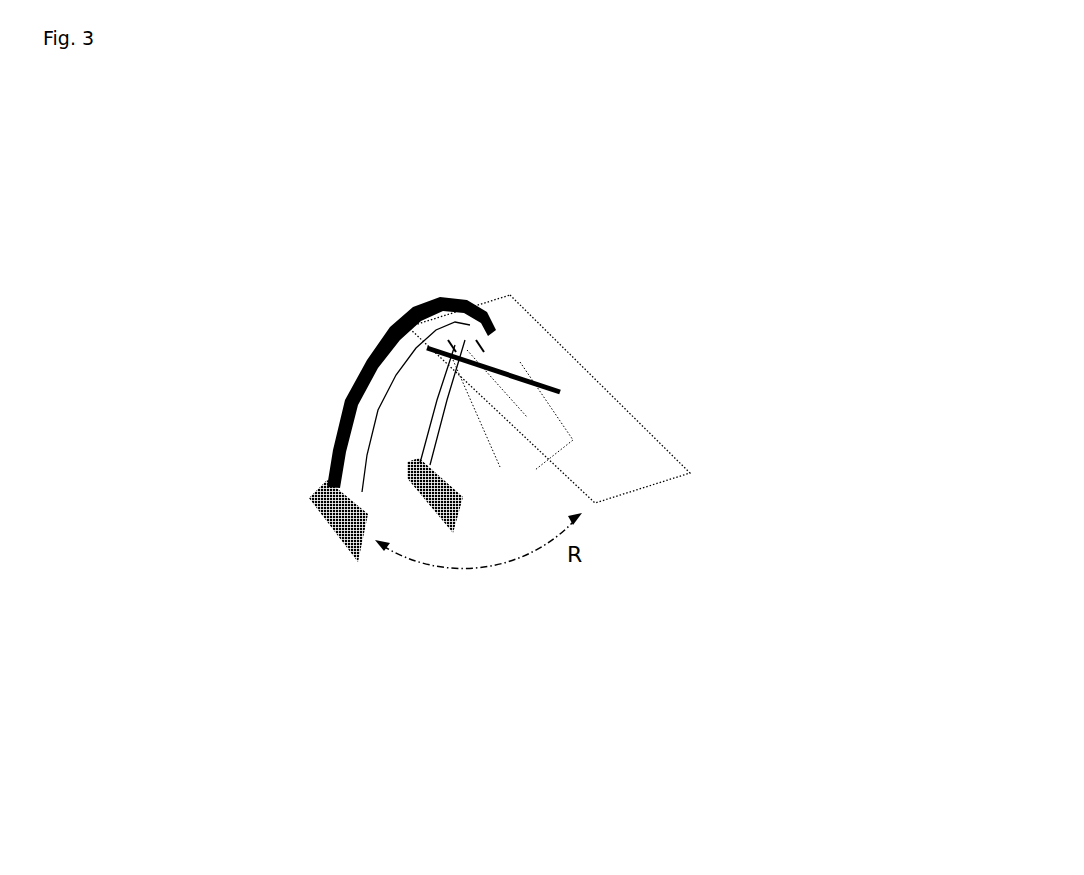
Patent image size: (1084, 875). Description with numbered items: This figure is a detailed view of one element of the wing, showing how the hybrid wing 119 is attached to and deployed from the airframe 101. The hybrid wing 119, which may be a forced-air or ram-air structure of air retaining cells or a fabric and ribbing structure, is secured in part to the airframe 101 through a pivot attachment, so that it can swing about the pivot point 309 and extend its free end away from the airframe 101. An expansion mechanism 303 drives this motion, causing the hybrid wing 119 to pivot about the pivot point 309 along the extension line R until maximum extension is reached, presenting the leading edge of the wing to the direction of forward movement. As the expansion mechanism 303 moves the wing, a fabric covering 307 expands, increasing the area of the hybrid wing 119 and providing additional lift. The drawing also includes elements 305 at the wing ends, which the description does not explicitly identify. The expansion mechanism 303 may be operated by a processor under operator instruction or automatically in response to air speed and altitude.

The airframe 101 is at (656, 459).
The hybrid wing 119 is at (333, 388).
The expansion mechanism 303 is at (531, 357).
The mounting blocks 305 is at (428, 545).
The fabric covering 307 is at (497, 436).
The pivot point 309 is at (454, 329).